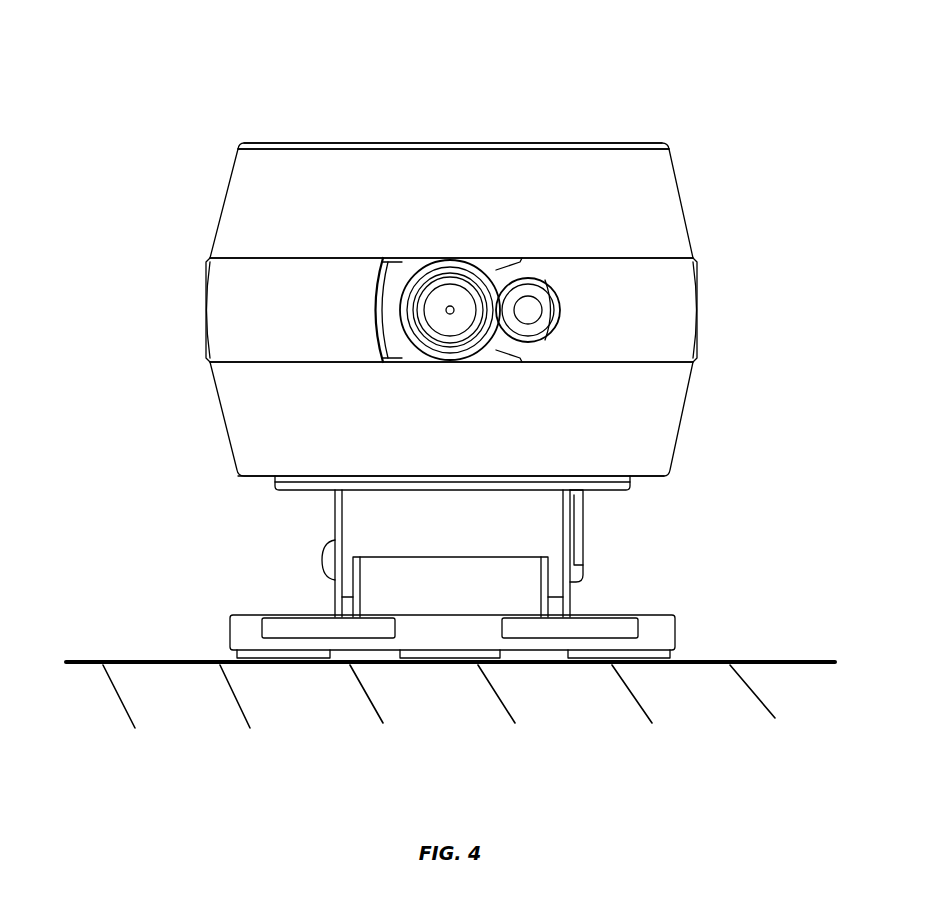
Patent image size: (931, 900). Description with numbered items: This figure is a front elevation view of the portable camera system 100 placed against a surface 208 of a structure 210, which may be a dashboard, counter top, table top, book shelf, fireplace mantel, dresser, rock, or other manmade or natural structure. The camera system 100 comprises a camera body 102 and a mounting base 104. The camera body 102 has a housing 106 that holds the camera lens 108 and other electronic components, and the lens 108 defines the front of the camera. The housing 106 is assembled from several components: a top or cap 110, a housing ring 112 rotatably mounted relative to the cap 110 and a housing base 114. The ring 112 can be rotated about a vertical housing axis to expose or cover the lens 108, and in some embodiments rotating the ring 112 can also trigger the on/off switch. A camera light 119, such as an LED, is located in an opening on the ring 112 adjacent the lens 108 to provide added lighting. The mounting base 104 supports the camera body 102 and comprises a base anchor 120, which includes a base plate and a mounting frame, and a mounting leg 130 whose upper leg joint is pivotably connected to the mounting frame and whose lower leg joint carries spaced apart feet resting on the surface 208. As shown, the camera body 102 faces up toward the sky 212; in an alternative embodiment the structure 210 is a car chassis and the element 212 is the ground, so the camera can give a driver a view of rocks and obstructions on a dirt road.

The camera system 100 is at (172, 178).
The camera body 102 is at (706, 182).
The mounting base 104 is at (313, 524).
The housing 106 is at (302, 140).
The camera lens 108 is at (452, 300).
The top or cap 110 is at (451, 224).
The housing ring 112 is at (451, 331).
The housing base 114 is at (451, 443).
The camera light 119 is at (530, 308).
The base anchor 120 is at (536, 532).
The mounting leg 130 is at (268, 612).
The surface 208 is at (778, 660).
The structure 210 is at (439, 717).
The sky 212 is at (453, 90).